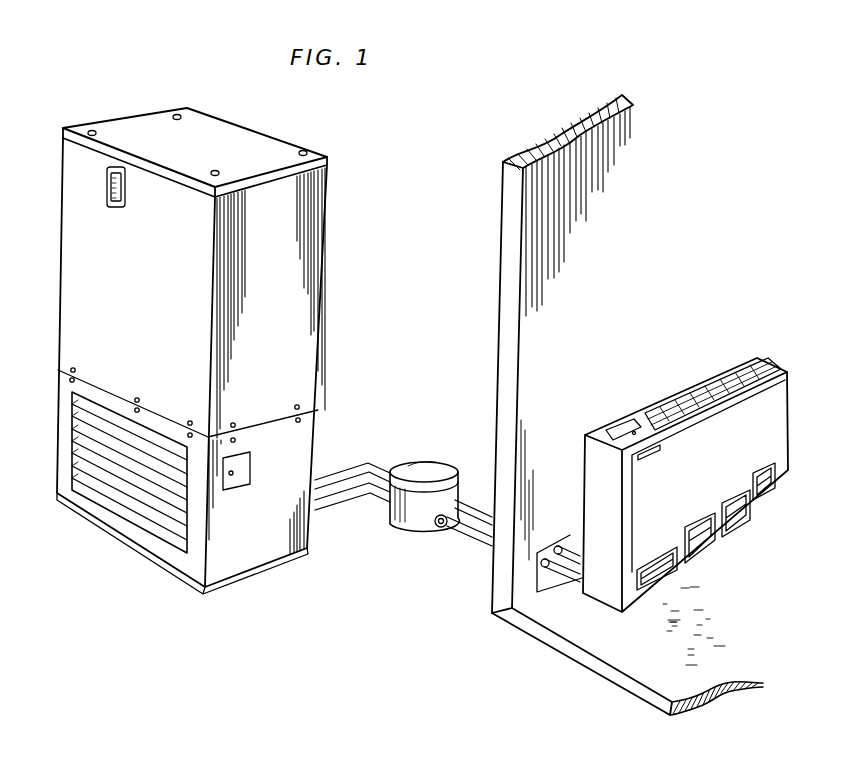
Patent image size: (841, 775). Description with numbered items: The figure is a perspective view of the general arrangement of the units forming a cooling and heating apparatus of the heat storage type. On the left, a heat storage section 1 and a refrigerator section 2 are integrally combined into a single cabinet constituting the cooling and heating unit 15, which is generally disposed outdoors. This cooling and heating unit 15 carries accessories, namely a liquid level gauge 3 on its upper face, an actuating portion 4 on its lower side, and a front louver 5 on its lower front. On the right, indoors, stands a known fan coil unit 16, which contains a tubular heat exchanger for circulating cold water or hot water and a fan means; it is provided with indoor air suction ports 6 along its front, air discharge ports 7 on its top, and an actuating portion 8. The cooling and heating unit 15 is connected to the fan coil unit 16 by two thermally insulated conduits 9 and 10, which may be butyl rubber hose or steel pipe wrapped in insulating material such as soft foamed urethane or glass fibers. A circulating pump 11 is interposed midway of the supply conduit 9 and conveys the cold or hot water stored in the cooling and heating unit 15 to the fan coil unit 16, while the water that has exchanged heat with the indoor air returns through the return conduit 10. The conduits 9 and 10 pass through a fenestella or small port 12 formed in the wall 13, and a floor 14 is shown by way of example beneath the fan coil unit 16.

The heat storage section 1 is at (313, 308).
The refrigerator section 2 is at (310, 430).
The liquid level gauge 3 is at (121, 193).
The actuating portion 4 is at (238, 483).
The front louver 5 is at (138, 522).
The indoor air suction ports 6 is at (762, 497).
The air discharge ports 7 is at (712, 390).
The actuating portion 8 is at (618, 430).
The supply conduit 9 is at (458, 528).
The return conduit 10 is at (478, 512).
The circulating pump 11 is at (405, 528).
The fenestella or small port 12 is at (542, 580).
The wall 13 is at (505, 352).
The floor 14 is at (583, 645).
The cooling and heating unit 15 is at (280, 147).
The fan coil unit 16 is at (595, 472).